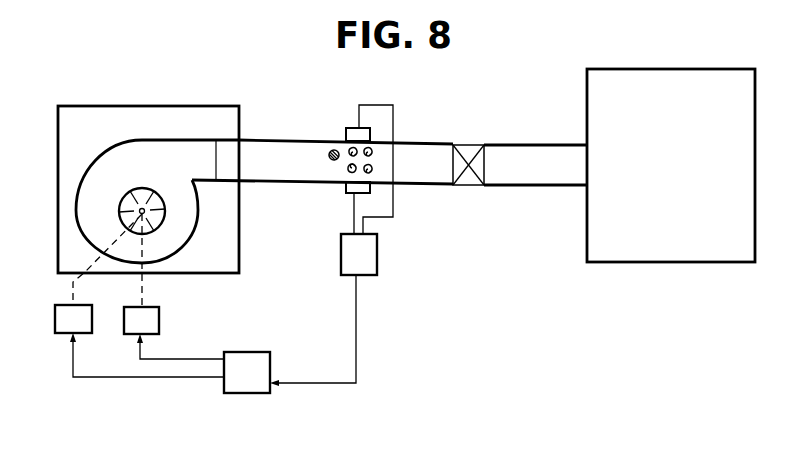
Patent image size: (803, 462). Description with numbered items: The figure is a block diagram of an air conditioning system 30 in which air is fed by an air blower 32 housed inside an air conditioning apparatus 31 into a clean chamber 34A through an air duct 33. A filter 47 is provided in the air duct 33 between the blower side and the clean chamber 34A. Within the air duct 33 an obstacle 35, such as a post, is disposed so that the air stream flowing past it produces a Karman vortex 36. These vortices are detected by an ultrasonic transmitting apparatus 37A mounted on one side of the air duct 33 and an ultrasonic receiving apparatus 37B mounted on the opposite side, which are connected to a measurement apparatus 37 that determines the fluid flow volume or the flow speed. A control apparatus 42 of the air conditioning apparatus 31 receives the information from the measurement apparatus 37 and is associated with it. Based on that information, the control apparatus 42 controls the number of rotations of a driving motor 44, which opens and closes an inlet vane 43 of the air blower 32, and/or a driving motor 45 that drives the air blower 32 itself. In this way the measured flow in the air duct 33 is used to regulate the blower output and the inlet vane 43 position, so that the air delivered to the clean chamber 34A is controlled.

The duct 30 is at (473, 127).
The air conditioning apparatus 31 is at (158, 103).
The air blower 32 is at (113, 147).
The air duct 33 is at (533, 145).
The clean chamber 34A is at (657, 69).
The obstacle 35 is at (328, 152).
The Karman vortex 36 is at (348, 148).
The measurement apparatus 37 is at (377, 263).
The ultrasonic transmitting apparatus 37A is at (367, 128).
The ultrasonic receiving apparatus 37B is at (347, 193).
The control apparatus 42 is at (247, 393).
The inlet vane 43 is at (122, 218).
The driving motor 44 is at (62, 333).
The driving motor 45 is at (159, 319).
The filter 47 is at (470, 187).